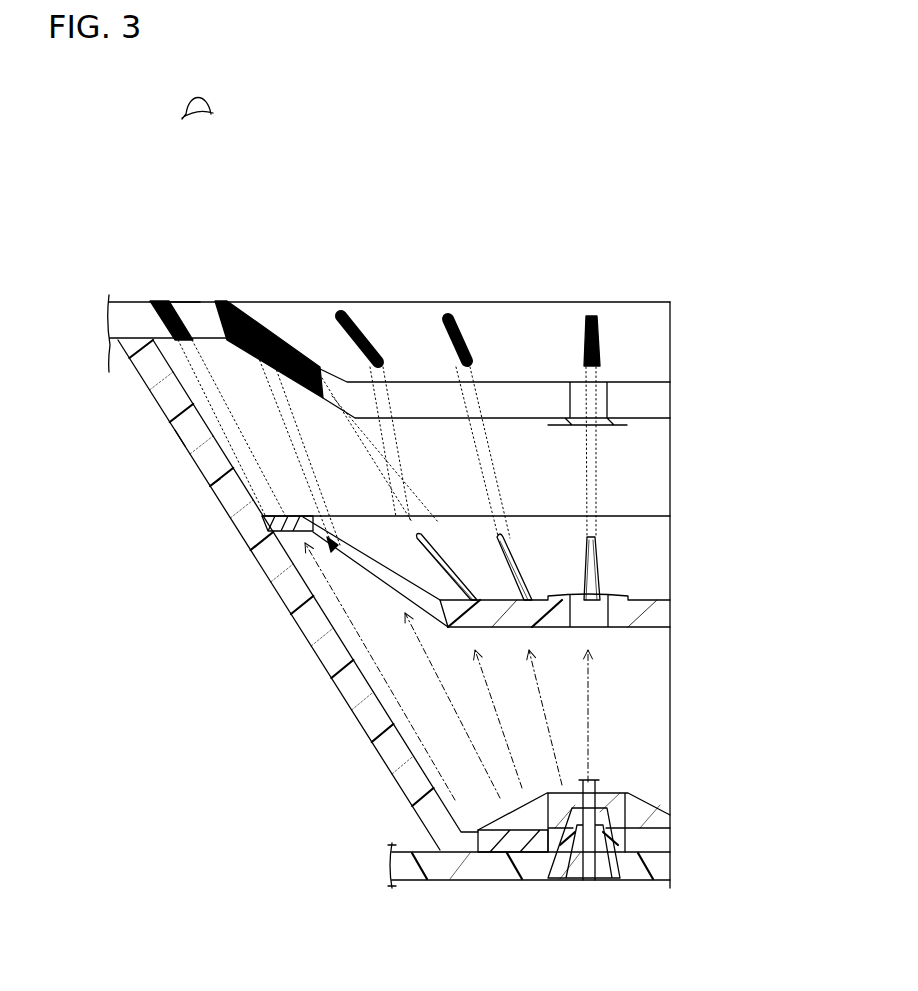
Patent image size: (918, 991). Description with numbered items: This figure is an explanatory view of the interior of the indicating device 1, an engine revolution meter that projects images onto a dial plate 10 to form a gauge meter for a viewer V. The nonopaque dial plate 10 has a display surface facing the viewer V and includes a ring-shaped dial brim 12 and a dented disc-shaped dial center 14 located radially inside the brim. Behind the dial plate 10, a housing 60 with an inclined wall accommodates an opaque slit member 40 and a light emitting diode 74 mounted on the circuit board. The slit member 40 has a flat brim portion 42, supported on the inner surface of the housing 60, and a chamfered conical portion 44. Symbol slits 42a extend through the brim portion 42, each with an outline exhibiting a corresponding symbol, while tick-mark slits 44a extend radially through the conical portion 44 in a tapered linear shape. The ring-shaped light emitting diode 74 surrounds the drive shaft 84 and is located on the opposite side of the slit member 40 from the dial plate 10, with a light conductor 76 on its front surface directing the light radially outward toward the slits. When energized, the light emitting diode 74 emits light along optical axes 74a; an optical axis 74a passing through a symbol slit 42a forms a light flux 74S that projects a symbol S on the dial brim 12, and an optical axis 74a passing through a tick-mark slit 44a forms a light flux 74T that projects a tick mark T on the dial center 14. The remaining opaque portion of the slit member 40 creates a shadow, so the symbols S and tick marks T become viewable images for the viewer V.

The indicating device 1 is at (727, 198).
The dial plate 10 is at (640, 283).
The dial brim 12 is at (122, 298).
The dial center 14 is at (635, 372).
The slit member 40 is at (640, 635).
The brim portion 42 is at (258, 531).
The symbol slit 42a is at (272, 519).
The conical portion 44 is at (645, 592).
The tick-mark slit 44a is at (378, 577).
The housing 60 is at (378, 772).
The light emitting diode 74 is at (508, 847).
The optical axis 74a is at (400, 615).
The light flux 74S is at (198, 439).
The light flux 74T is at (212, 487).
The light conductor 76 is at (480, 826).
The drive shaft 84 is at (587, 877).
The symbol S is at (155, 297).
The tick mark T is at (262, 330).
The viewer V is at (207, 97).